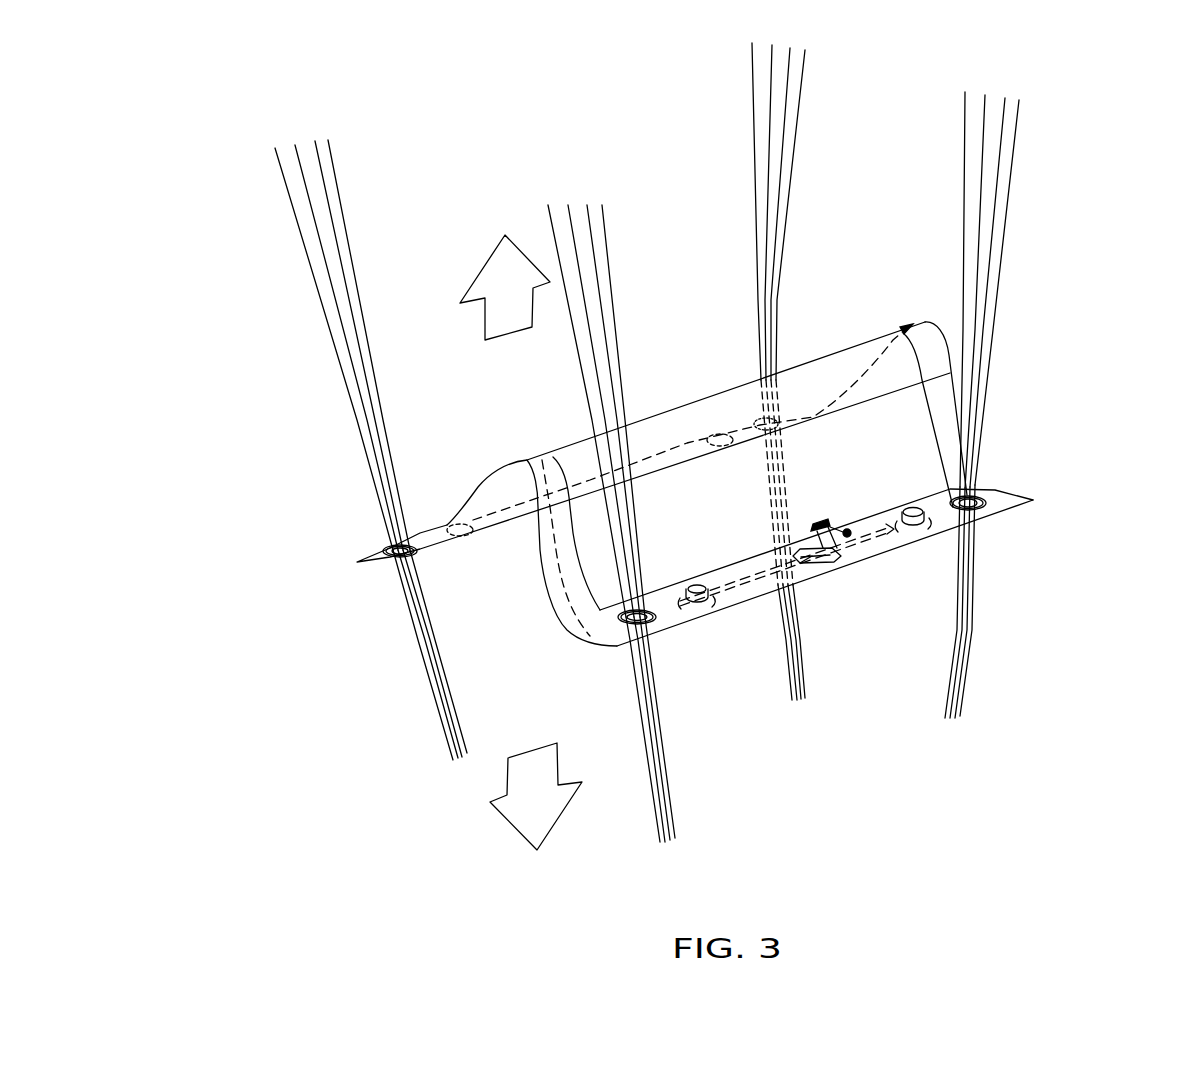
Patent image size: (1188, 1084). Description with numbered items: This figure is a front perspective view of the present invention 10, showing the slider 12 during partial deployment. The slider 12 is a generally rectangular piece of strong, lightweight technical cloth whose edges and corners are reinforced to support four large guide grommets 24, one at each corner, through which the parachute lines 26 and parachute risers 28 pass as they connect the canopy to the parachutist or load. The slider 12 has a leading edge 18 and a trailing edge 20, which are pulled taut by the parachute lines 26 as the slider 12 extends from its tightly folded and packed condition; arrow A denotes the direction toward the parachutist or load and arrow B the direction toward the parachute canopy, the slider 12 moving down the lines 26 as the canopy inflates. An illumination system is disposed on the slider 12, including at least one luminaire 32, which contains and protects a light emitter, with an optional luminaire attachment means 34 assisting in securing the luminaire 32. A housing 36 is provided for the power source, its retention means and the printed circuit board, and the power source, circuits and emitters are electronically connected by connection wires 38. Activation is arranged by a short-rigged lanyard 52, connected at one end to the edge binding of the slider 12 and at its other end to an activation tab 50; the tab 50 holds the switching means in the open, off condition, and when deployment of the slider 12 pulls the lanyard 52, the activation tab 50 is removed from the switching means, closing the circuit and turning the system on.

The present invention 10 is at (645, 132).
The slider 12 is at (674, 382).
The leading edge 18 is at (885, 567).
The trailing edge 20 is at (342, 509).
The guide grommets 24 is at (1014, 414).
The parachute lines 26 is at (653, 330).
The parachute risers 28 is at (715, 667).
The luminaire 32 is at (721, 504).
The luminaire attachment means 34 is at (1001, 561).
The housing 36 is at (861, 647).
The connection wires 38 is at (680, 600).
The activation tab 50 is at (867, 598).
The lanyard 52 is at (856, 476).